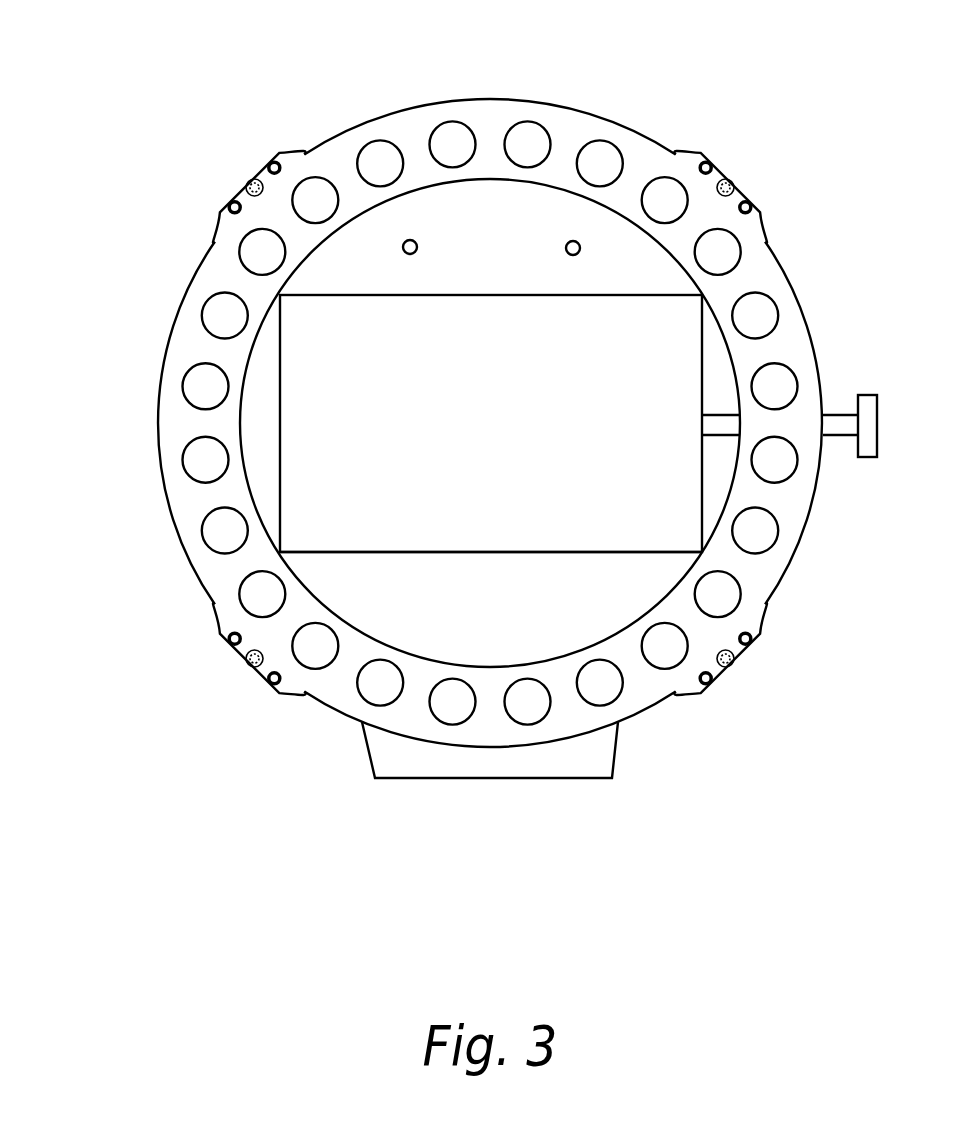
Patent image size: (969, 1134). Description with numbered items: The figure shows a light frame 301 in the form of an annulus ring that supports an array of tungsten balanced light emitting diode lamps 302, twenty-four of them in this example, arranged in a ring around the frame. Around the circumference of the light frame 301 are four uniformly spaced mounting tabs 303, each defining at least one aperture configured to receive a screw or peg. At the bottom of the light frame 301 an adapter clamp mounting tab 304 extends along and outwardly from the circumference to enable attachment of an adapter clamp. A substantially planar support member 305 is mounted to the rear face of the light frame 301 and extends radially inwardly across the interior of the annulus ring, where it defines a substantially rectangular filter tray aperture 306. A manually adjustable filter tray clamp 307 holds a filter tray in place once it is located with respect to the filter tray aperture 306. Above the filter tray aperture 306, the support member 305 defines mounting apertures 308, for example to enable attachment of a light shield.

The light frame 301 is at (692, 124).
The light emitting diode lamps 302 is at (605, 148).
The mounting tabs 303 is at (740, 173).
The adapter clamp mounting tab 304 is at (435, 762).
The support member 305 is at (267, 422).
The filter tray aperture 306 is at (566, 573).
The filter tray clamp 307 is at (843, 422).
The mounting apertures 308 is at (573, 248).